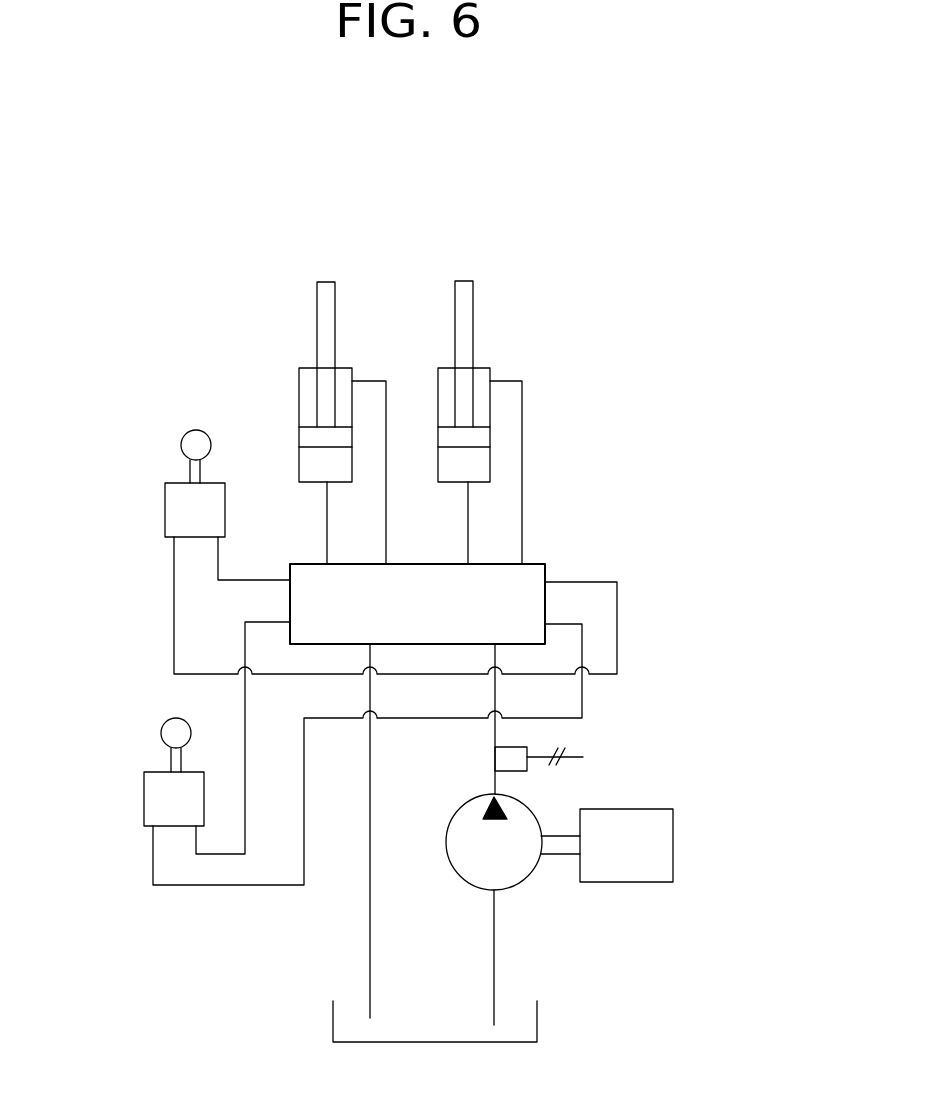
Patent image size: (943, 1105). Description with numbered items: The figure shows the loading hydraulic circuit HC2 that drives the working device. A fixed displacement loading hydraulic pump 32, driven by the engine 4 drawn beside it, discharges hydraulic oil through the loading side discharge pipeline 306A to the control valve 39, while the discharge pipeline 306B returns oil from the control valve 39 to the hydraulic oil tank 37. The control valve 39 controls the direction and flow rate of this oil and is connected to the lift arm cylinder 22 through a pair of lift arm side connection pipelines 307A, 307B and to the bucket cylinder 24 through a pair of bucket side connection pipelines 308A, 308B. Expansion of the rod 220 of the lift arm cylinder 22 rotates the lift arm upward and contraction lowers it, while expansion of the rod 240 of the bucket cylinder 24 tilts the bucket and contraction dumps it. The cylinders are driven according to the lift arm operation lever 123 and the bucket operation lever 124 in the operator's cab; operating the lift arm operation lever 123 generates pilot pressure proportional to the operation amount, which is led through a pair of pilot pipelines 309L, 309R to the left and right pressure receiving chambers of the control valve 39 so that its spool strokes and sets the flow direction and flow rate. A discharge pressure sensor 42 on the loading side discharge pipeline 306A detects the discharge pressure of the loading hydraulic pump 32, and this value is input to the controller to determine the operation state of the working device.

The loading hydraulic circuit HC2 is at (435, 665).
The bucket cylinder 24 is at (339, 367).
The lift arm cylinder 22 is at (487, 367).
The rod 240 is at (301, 340).
The rod 220 is at (440, 340).
The bucket side connection pipeline 308A is at (398, 472).
The bucket side connection pipeline 308B is at (301, 523).
The lift arm side connection pipeline 307A is at (550, 472).
The lift arm side connection pipeline 307B is at (443, 523).
The control valve 39 is at (450, 578).
The bucket operation lever 124 is at (200, 474).
The lift arm operation lever 123 is at (148, 743).
The pilot pipeline 309L is at (253, 738).
The pilot pipeline 309R is at (367, 788).
The loading side discharge pipeline 306A is at (450, 719).
The discharge pipeline 306B is at (411, 831).
The loading hydraulic pump 32 is at (513, 909).
The discharge pressure sensor 42 is at (539, 789).
The engine 4 is at (638, 878).
The hydraulic oil tank 37 is at (463, 1039).